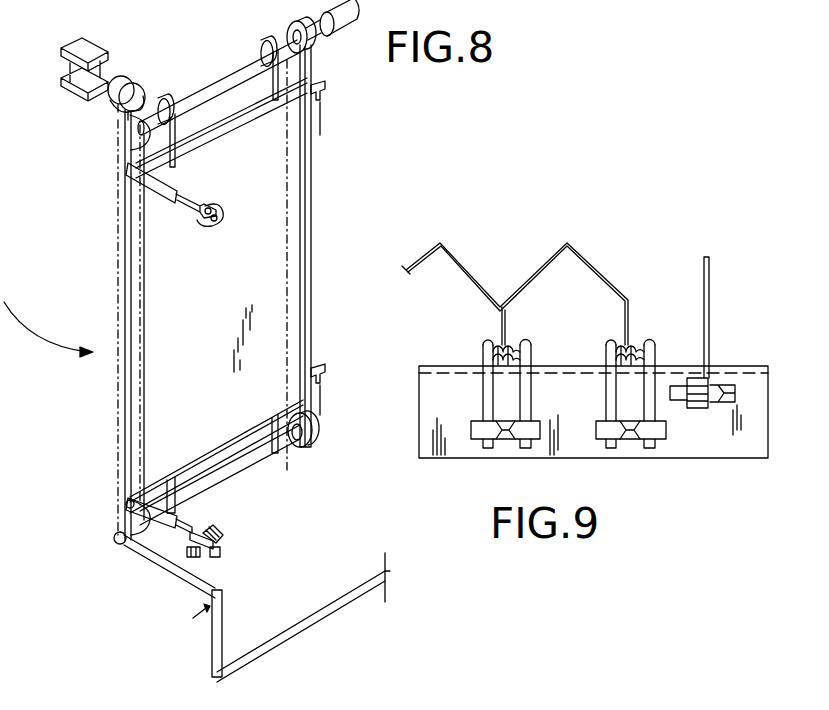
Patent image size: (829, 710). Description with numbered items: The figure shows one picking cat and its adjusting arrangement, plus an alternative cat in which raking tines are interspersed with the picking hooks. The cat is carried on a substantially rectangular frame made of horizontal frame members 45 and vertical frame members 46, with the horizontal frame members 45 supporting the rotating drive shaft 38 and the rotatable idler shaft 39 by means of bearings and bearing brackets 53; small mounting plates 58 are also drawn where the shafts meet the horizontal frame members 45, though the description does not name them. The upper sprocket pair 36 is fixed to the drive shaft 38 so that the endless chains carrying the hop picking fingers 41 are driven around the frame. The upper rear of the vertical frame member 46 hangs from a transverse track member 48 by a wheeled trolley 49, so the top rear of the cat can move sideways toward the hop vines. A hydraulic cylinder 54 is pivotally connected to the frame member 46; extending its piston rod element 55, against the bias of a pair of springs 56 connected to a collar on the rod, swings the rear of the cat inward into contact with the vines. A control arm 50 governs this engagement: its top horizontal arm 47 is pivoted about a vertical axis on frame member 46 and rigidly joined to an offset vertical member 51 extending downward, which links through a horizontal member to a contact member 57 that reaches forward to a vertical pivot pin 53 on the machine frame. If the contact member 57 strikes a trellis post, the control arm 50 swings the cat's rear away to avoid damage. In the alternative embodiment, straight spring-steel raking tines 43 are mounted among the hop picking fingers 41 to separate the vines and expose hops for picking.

In FIG. 8, the upper sprocket pair 36 is at (141, 120).
In FIG. 8, the drive shaft 38 is at (277, 43).
In FIG. 8, the idler shaft 39 is at (257, 460).
In FIG. 9, the hop picking fingers 41 is at (587, 258).
In FIG. 9, the raking tines 43 is at (710, 262).
In FIG. 8, the horizontal frame members 45 is at (229, 133).
In FIG. 8, the vertical frame members 46 is at (313, 195).
In FIG. 8, the top horizontal arm 47 is at (182, 582).
In FIG. 8, the track member 48 is at (98, 50).
In FIG. 8, the wheeled trolley 49 is at (112, 106).
In FIG. 8, the control arm 50 is at (194, 623).
In FIG. 8, the offset vertical member 51 is at (223, 622).
In FIG. 8, the pin 53 is at (388, 572).
In FIG. 8, the hydraulic cylinder 54 is at (197, 513).
In FIG. 8, the piston rod element 55 is at (217, 550).
In FIG. 8, the springs 56 is at (217, 532).
In FIG. 8, the contact member 57 is at (323, 617).
In FIG. 8, the bracket plate 58 is at (172, 110).